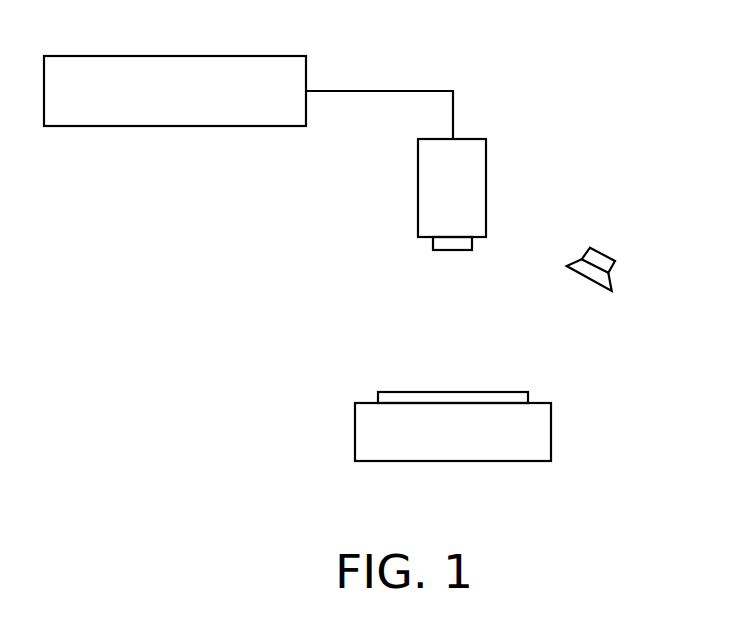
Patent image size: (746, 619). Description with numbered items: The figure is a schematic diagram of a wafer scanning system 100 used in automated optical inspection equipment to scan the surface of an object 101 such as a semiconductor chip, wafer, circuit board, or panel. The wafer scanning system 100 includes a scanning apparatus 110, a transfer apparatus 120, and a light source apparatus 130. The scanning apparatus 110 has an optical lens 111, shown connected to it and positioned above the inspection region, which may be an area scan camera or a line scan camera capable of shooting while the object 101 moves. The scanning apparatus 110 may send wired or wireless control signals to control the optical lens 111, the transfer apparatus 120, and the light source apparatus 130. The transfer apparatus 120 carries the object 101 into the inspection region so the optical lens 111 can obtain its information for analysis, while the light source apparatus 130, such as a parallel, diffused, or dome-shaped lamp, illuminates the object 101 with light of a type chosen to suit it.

The wafer scanning system 100 is at (710, 520).
The scanning apparatus 110 is at (239, 56).
The optical lens 111 is at (476, 139).
The light source apparatus 130 is at (603, 250).
The transfer apparatus 120 is at (551, 430).
The object 101 is at (515, 392).